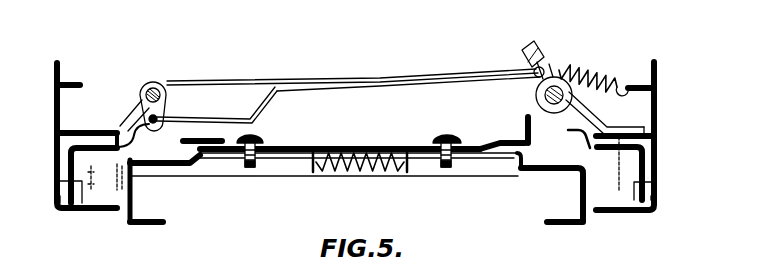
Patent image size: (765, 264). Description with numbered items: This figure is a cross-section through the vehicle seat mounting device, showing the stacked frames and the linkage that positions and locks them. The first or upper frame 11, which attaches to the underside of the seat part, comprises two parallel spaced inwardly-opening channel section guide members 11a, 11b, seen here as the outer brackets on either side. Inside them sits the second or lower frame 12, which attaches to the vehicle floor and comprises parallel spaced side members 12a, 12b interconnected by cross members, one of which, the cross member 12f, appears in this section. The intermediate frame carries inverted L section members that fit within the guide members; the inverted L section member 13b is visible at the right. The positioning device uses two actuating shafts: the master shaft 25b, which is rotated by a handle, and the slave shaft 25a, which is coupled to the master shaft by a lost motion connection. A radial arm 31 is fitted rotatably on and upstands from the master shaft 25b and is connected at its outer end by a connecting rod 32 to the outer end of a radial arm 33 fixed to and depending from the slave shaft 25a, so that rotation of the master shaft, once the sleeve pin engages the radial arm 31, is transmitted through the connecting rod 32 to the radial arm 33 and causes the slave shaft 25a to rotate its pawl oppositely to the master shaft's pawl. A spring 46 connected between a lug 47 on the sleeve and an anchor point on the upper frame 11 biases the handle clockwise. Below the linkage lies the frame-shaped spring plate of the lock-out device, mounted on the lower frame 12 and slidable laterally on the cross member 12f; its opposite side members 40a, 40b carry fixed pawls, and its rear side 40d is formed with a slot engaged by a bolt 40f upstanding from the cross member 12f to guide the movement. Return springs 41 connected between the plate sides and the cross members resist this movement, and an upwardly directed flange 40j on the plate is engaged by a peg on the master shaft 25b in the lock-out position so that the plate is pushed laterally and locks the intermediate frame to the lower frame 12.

The first frame 11 is at (52, 122).
The channel section guide member 11a is at (62, 210).
The channel section guide member 11b is at (617, 213).
The second frame 12 is at (141, 209).
The side member 12a is at (147, 221).
The side member 12b is at (567, 218).
The cross member 12f is at (466, 160).
The inverted L section member 13b is at (660, 152).
The slave shaft 25a is at (148, 87).
The master shaft 25b is at (541, 93).
The radial arm 31 is at (552, 72).
The connecting rod 32 is at (400, 77).
The radial arm 33 is at (168, 112).
The side member of spring plate 40a is at (195, 138).
The side member of spring plate 40b is at (492, 143).
The rear side of spring plate 40d is at (356, 146).
The bolt 40f is at (436, 139).
The upwardly directed flange 40j is at (522, 130).
The return spring 41 is at (336, 176).
The spring 46 is at (576, 38).
The lug 47 is at (525, 47).